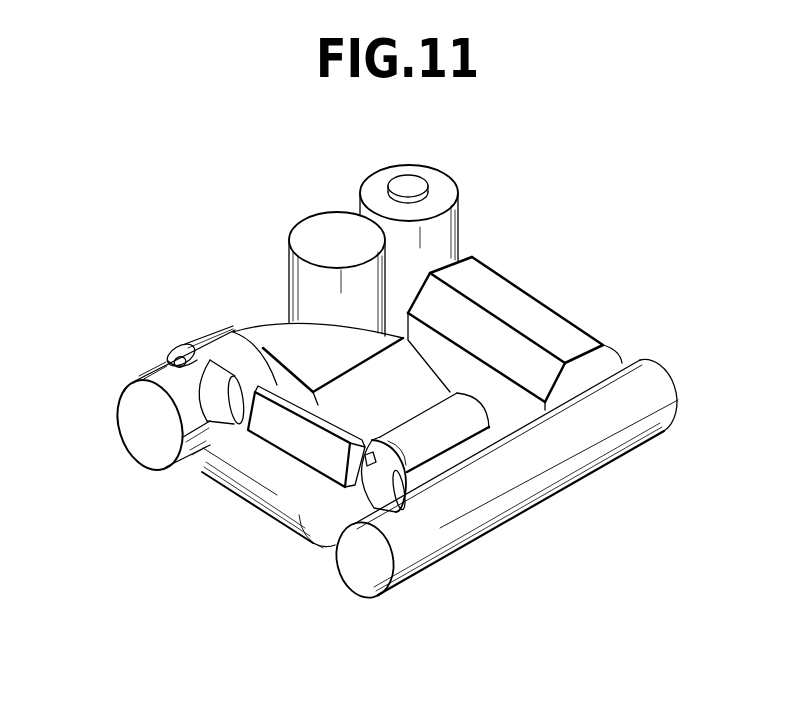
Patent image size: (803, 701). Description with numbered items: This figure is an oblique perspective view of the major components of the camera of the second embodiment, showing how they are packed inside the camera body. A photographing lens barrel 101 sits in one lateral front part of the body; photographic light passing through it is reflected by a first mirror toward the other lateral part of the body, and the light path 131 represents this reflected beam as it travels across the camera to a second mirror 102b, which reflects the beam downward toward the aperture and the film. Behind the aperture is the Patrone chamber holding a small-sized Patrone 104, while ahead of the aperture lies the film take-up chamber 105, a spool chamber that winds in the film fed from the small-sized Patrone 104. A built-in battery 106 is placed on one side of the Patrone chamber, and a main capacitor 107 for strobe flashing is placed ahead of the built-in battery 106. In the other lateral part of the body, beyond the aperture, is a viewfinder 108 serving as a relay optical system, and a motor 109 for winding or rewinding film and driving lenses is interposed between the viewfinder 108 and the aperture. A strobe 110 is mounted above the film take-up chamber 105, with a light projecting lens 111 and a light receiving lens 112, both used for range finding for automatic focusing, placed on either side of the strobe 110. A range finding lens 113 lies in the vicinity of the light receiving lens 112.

The photographing lens barrel 101 is at (140, 437).
The second mirror 102b is at (417, 377).
The small-sized Patrone 104 is at (485, 274).
The film take-up chamber 105 is at (255, 495).
The built-in battery 106 is at (443, 184).
The main capacitor 107 is at (330, 218).
The viewfinder 108 is at (470, 524).
The motor 109 is at (457, 428).
The strobe 110 is at (320, 464).
The light projecting lens 111 is at (392, 516).
The light receiving lens 112 is at (210, 400).
The range finding lens 113 is at (180, 343).
The light path 131 is at (273, 333).